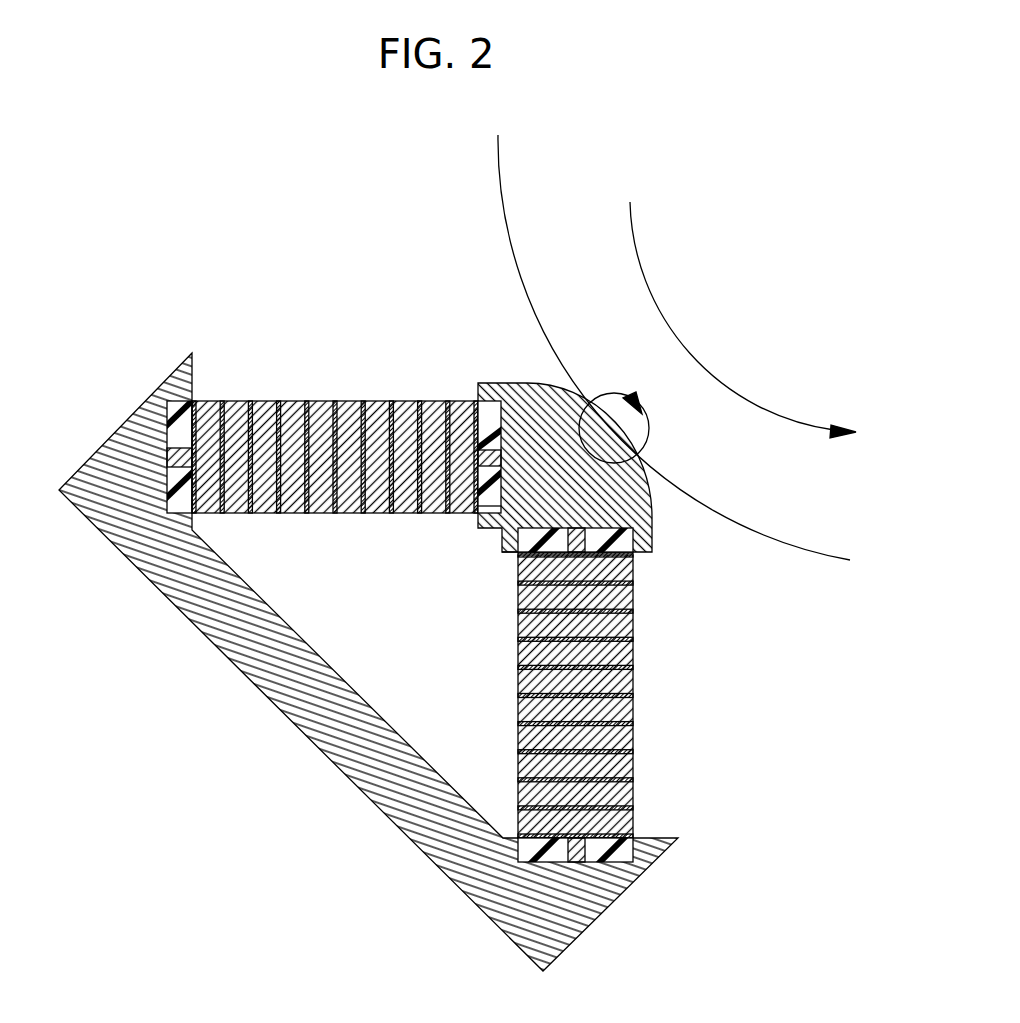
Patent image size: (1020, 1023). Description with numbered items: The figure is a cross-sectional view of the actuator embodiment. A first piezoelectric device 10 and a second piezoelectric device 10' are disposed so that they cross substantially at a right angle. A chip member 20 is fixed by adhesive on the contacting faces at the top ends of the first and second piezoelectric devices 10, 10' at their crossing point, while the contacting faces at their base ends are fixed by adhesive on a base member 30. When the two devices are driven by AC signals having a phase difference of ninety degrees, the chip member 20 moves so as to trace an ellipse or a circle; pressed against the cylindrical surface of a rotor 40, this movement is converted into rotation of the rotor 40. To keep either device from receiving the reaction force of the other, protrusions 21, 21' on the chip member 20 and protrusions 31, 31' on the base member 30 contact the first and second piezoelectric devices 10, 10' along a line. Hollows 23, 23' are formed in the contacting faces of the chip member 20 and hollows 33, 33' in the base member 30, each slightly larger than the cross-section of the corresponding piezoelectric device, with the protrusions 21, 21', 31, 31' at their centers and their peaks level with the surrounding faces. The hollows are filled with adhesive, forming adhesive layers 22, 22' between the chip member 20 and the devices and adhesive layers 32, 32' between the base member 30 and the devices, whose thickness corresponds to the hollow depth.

The first piezoelectric device 10 is at (335, 425).
The second piezoelectric device 10' is at (623, 696).
The chip member 20 is at (636, 508).
The protrusion 21 is at (450, 425).
The protrusion 21' is at (623, 588).
The adhesive layer 22 is at (470, 535).
The adhesive layer 22' is at (491, 578).
The hollow 23 is at (498, 424).
The hollow 23' is at (623, 557).
The base member 30 is at (296, 716).
The protrusion 31 is at (120, 442).
The protrusion 31' is at (623, 871).
The adhesive layer 32 is at (157, 512).
The adhesive layer 32' is at (553, 822).
The hollow 33 is at (139, 408).
The hollow 33' is at (657, 853).
The rotor 40 is at (806, 523).